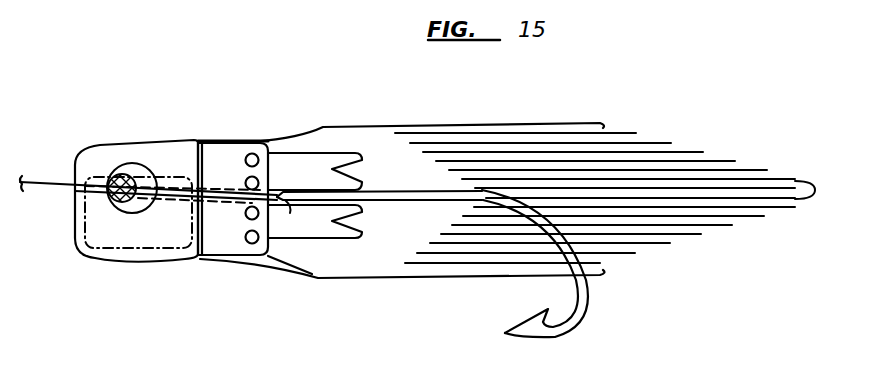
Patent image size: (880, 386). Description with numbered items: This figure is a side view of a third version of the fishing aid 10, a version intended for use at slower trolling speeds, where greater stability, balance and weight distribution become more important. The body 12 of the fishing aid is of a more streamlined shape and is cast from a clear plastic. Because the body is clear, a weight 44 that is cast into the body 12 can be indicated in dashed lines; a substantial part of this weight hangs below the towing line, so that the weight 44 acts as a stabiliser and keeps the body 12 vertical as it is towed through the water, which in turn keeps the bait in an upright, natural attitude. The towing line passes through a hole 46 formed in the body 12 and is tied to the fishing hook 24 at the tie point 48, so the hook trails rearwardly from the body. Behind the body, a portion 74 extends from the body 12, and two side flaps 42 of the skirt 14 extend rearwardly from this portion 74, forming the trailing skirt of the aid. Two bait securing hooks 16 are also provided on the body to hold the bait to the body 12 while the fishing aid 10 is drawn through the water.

The fishing aid 10 is at (174, 281).
The body 12 is at (97, 155).
The skirt 14 is at (390, 160).
The bait securing hooks 16 is at (323, 152).
The fishing hook 24 is at (583, 308).
The side flaps 42 is at (668, 162).
The weight 44 is at (99, 226).
The hole 46 is at (167, 187).
The tie point 48 is at (290, 213).
The portion 74 is at (228, 143).